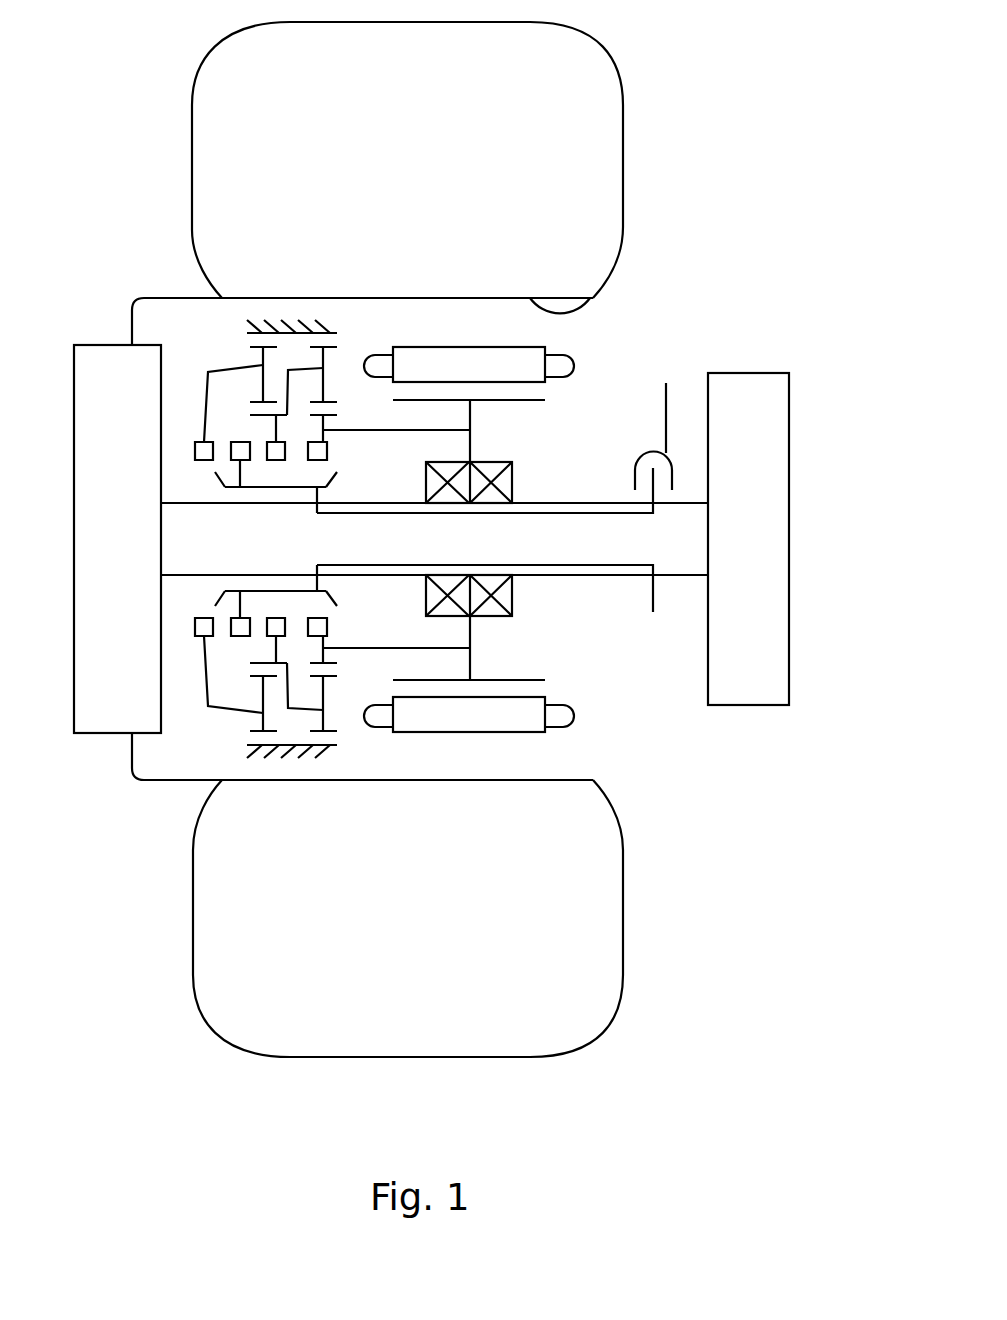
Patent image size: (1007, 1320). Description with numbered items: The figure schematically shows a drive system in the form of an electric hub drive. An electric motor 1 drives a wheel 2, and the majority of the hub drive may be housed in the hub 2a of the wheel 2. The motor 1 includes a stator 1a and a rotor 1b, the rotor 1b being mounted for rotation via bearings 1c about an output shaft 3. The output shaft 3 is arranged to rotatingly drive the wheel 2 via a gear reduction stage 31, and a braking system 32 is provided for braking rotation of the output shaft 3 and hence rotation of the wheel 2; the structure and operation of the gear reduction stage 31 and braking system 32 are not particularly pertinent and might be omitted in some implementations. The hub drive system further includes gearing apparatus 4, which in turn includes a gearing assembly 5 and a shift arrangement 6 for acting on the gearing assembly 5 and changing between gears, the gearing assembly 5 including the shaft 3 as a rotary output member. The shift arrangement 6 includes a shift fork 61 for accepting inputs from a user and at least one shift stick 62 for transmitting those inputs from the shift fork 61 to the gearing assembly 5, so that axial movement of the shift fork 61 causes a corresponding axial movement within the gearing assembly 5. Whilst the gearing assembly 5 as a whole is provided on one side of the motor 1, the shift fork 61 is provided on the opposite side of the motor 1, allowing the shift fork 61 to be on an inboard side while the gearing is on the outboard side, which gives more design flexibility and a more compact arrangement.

The electric motor 1 is at (474, 523).
The stator 1a is at (532, 362).
The rotor 1b is at (510, 677).
The bearings 1c is at (507, 473).
The wheel 2 is at (598, 125).
The hub 2a is at (563, 312).
The output shaft 3 is at (610, 568).
The gear reduction stage 31 is at (87, 408).
The braking system 32 is at (760, 492).
The gearing apparatus 4 is at (205, 752).
The gearing assembly 5 is at (213, 360).
The shift arrangement 6 is at (678, 455).
The shift fork 61 is at (666, 413).
The shift stick 62 is at (623, 517).